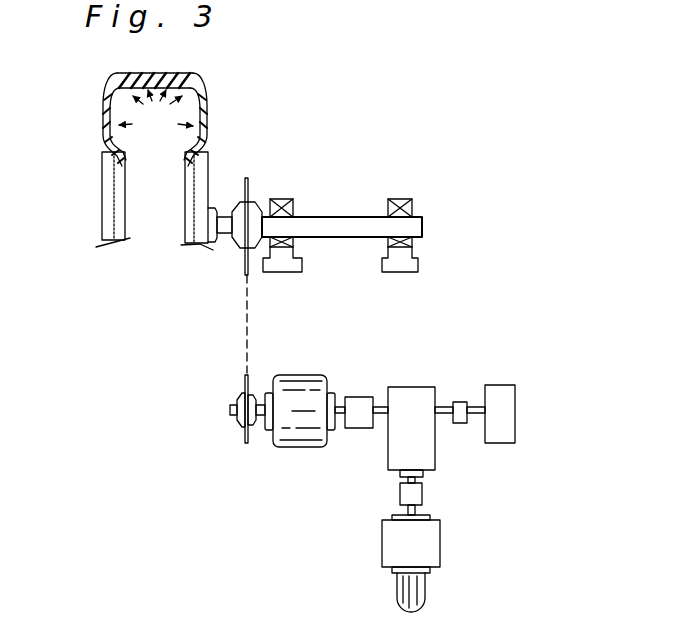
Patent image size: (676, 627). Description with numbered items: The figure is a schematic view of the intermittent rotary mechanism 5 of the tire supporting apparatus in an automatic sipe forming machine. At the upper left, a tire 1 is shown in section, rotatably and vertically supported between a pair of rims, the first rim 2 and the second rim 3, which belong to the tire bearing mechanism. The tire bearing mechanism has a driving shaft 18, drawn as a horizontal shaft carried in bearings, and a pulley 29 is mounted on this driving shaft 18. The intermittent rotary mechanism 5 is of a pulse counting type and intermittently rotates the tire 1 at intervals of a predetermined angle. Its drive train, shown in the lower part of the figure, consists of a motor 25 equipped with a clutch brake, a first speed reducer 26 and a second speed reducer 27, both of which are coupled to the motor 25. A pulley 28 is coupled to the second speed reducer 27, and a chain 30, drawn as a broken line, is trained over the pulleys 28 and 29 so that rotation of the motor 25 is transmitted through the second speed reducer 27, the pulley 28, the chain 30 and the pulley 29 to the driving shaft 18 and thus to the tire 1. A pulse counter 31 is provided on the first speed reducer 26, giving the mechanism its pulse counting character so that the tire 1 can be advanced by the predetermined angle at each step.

The tire 1 is at (203, 100).
The first rim 2 is at (200, 163).
The second rim 3 is at (108, 178).
The intermittent rotary mechanism 5 is at (413, 370).
The driving shaft 18 is at (338, 220).
The motor 25 is at (440, 535).
The first speed reducer 26 is at (435, 455).
The second speed reducer 27 is at (303, 447).
The pulley 28 is at (246, 444).
The pulley 29 is at (247, 178).
The chain 30 is at (250, 320).
The pulse counter 31 is at (515, 405).